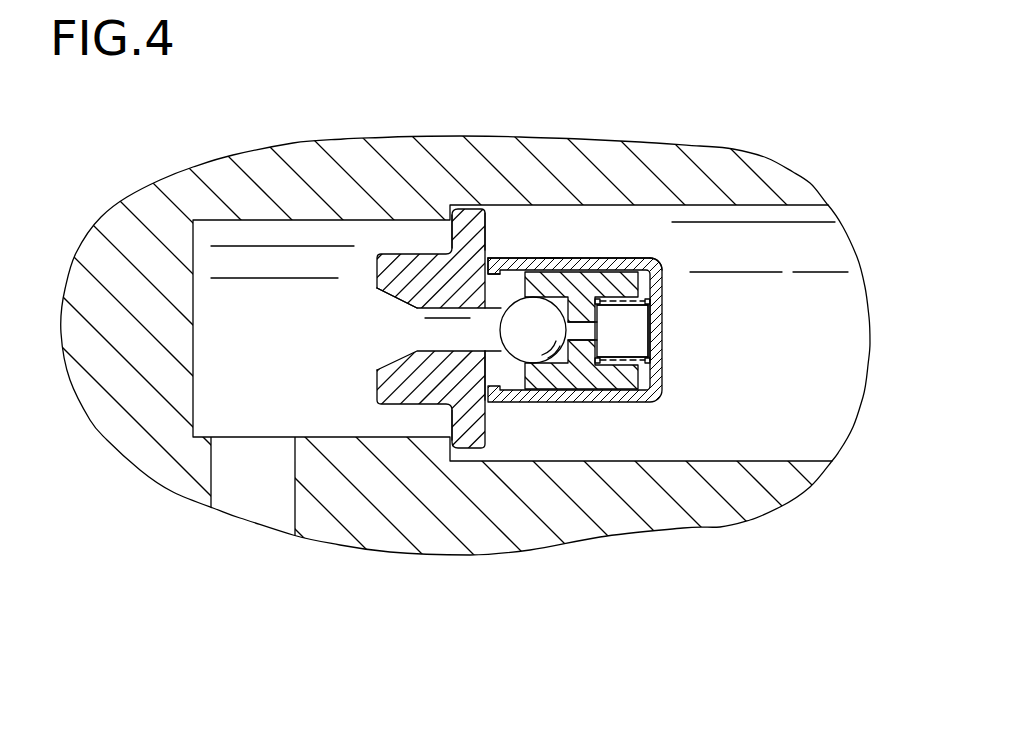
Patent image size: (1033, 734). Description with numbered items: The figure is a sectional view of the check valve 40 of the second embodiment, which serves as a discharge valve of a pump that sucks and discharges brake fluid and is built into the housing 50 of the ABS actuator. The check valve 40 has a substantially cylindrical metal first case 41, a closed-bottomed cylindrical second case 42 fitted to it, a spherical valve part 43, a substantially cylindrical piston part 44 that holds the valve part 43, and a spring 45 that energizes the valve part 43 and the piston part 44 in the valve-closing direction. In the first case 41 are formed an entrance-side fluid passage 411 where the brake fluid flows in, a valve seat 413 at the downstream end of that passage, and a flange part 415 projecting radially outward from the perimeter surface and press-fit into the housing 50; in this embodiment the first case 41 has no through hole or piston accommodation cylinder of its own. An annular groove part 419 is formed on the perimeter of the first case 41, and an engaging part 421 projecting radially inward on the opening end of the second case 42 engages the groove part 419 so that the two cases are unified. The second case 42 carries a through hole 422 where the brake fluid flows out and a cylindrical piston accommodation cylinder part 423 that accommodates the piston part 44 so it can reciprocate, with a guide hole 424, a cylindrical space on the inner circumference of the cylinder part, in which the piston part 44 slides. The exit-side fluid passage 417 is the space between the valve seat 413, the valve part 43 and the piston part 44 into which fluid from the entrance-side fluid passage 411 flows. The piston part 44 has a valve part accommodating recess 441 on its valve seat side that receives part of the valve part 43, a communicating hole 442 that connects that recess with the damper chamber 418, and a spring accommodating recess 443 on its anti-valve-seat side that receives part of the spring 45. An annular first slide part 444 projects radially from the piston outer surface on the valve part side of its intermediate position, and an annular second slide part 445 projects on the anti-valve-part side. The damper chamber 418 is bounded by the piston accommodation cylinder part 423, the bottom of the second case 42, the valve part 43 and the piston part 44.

The check valve 40 is at (362, 330).
The first case 41 is at (388, 241).
The entrance-side fluid passage 411 is at (375, 312).
The valve seat 413 is at (490, 402).
The flange part 415 is at (467, 233).
The exit-side fluid passage 417 is at (465, 440).
The damper chamber 418 is at (633, 332).
The groove part 419 is at (488, 268).
The second case 42 is at (622, 226).
The engaging part 421 is at (523, 383).
The through hole 422 is at (510, 263).
The piston accommodation cylinder part 423 is at (563, 261).
The guide hole 424 is at (622, 243).
The valve part 43 is at (523, 352).
The piston part 44 is at (625, 467).
The valve part accommodating recess 441 is at (582, 333).
The communicating hole 442 is at (587, 392).
The spring accommodating recess 443 is at (637, 385).
The first slide part 444 is at (542, 383).
The second slide part 445 is at (618, 390).
The spring 45 is at (650, 260).
The housing 50 is at (150, 467).